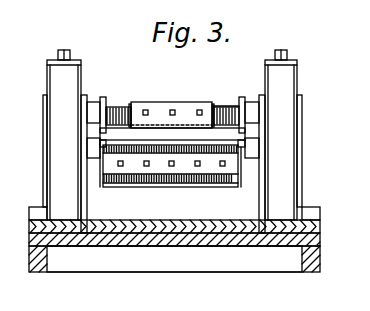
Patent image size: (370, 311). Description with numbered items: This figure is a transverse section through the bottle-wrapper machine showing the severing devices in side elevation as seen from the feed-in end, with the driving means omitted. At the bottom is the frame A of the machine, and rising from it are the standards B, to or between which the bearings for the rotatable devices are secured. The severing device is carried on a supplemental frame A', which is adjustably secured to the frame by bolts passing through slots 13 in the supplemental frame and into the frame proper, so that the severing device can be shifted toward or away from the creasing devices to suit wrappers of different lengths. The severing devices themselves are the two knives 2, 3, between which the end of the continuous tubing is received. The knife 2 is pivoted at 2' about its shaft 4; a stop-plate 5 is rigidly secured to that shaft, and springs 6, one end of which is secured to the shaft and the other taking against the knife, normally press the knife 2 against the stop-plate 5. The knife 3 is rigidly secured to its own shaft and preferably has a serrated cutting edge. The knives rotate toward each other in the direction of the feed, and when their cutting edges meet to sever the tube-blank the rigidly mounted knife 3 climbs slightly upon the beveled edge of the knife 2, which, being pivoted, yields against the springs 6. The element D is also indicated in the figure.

The standards B is at (172, 141).
The frame A is at (174, 240).
The supplemental frame A' is at (174, 222).
The slots 13 is at (93, 222).
The knife 2 is at (184, 130).
The pivot 2' is at (180, 104).
The knife 3 is at (237, 150).
The shaft 4 is at (122, 104).
The stop-plate 5 is at (184, 101).
The springs 6 is at (128, 104).
The adjusting device D is at (220, 104).